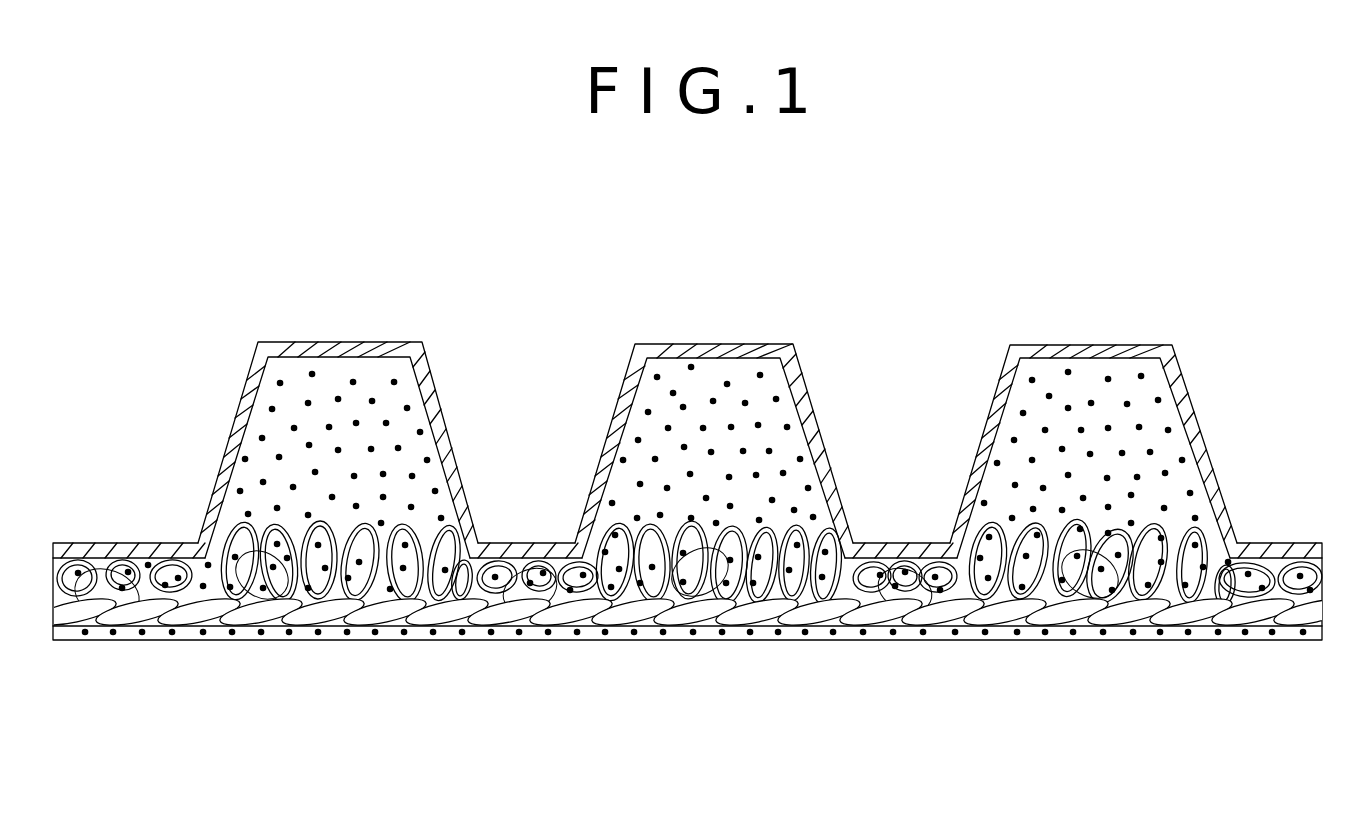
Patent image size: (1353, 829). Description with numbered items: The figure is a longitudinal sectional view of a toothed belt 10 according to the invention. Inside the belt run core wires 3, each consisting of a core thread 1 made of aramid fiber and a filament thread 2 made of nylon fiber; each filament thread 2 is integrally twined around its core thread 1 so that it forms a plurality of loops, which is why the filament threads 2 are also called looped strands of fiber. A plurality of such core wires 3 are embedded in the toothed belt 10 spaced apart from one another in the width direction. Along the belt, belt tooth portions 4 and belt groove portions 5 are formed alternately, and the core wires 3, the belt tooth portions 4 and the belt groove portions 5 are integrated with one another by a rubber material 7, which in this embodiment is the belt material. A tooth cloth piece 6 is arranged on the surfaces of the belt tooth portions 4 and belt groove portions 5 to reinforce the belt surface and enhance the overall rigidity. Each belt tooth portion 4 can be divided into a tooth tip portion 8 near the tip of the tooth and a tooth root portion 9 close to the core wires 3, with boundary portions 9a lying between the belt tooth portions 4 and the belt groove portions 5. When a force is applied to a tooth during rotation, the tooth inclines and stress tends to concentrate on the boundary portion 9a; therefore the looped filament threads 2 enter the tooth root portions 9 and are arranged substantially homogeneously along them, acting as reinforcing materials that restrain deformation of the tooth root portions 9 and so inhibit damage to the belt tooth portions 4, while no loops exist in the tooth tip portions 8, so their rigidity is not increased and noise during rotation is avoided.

The core threads 1 is at (733, 615).
The filament threads 2 is at (703, 626).
The core wires 3 is at (692, 696).
The belt tooth portions 4 is at (338, 342).
The belt groove portions 5 is at (522, 547).
The tooth cloth piece 6 is at (252, 378).
The rubber material 7 is at (256, 450).
The tooth tip portions 8 is at (343, 430).
The tooth root portions 9 is at (386, 533).
The boundary portions 9a is at (188, 538).
The toothed belt 10 is at (937, 652).